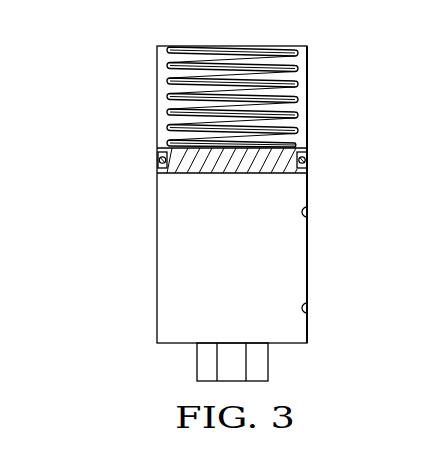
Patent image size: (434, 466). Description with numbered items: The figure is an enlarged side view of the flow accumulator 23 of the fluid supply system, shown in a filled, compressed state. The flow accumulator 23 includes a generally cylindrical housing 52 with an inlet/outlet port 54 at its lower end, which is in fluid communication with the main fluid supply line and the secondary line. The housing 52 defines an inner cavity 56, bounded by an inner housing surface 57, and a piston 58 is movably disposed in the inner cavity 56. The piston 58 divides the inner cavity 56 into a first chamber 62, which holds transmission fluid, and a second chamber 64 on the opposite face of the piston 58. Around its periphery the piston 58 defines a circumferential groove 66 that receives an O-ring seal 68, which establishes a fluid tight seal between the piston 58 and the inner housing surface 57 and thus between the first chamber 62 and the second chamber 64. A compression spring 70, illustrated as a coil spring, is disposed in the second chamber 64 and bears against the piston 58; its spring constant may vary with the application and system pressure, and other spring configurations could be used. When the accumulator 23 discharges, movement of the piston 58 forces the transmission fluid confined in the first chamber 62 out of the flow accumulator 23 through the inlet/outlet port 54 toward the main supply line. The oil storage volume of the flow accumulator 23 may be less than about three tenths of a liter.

The flow accumulator 23 is at (99, 33).
The housing 52 is at (157, 258).
The inlet/outlet port 54 is at (268, 362).
The inner cavity 56 is at (305, 218).
The inner housing surface 57 is at (305, 308).
The piston 58 is at (222, 162).
The first chamber 62 is at (250, 256).
The second chamber 64 is at (307, 98).
The circumferential groove 66 is at (158, 161).
The O-ring seal 68 is at (158, 160).
The compression spring 70 is at (168, 80).